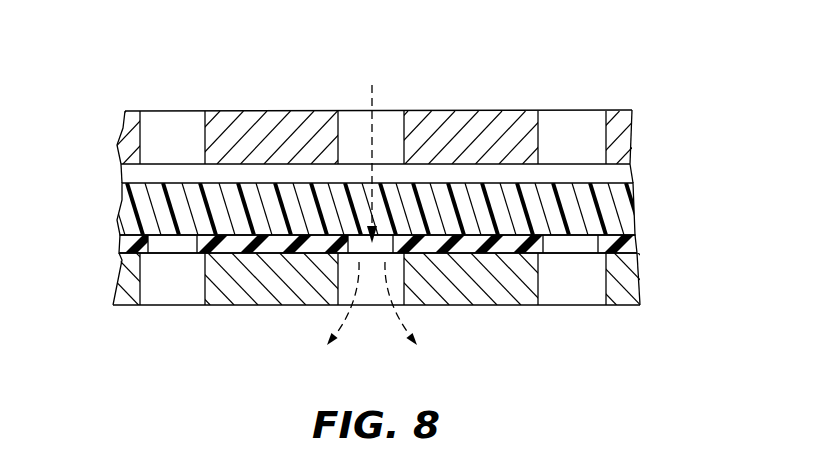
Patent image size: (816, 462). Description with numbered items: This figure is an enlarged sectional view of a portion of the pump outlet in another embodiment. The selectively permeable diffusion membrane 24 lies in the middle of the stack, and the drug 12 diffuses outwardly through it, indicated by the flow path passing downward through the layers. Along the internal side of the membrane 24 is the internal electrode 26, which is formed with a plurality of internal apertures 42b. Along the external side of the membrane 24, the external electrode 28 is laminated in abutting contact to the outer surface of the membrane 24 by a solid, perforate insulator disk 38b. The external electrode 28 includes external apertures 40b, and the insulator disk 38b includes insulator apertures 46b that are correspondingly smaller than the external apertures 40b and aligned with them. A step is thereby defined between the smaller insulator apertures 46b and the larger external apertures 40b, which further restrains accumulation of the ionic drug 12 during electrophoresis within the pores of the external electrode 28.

The drug 12 is at (372, 96).
The selectively permeable diffusion membrane 24 is at (635, 207).
The internal electrode 26 is at (490, 111).
The external electrode 28 is at (640, 288).
The insulator disk 38b is at (636, 243).
The external apertures 40b is at (608, 287).
The internal apertures 42b is at (539, 118).
The insulator apertures 46b is at (545, 248).